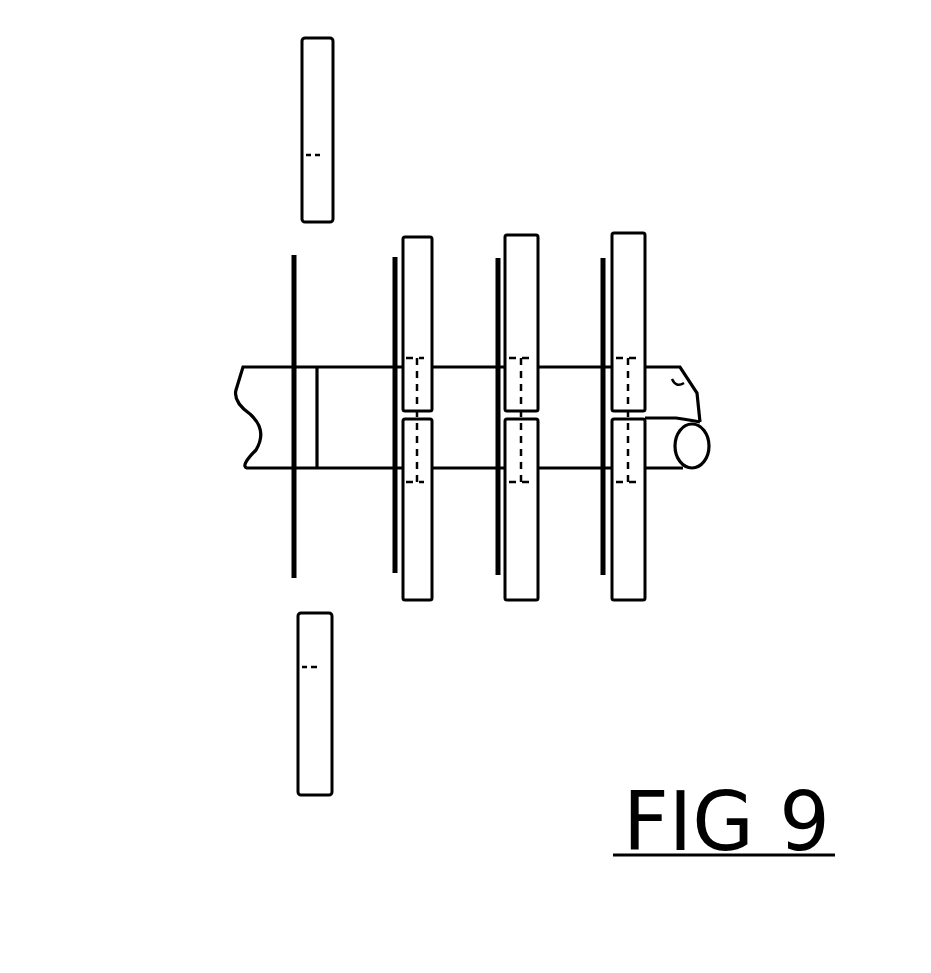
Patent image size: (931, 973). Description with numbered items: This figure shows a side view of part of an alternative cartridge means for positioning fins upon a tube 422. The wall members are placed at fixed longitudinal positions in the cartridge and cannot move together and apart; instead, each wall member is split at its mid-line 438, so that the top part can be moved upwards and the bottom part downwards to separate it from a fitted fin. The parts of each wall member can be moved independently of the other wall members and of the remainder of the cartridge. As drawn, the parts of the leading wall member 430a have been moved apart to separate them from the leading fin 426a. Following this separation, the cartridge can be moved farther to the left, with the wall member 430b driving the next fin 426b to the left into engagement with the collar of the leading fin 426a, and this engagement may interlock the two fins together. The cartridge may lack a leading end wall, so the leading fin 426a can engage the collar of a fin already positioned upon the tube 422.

The tube 422 is at (698, 385).
The mid-line 438 is at (700, 430).
The leading fin 426a is at (290, 508).
The next fin 426b is at (392, 552).
The leading wall member 430a is at (315, 116).
The wall member 430b is at (420, 245).